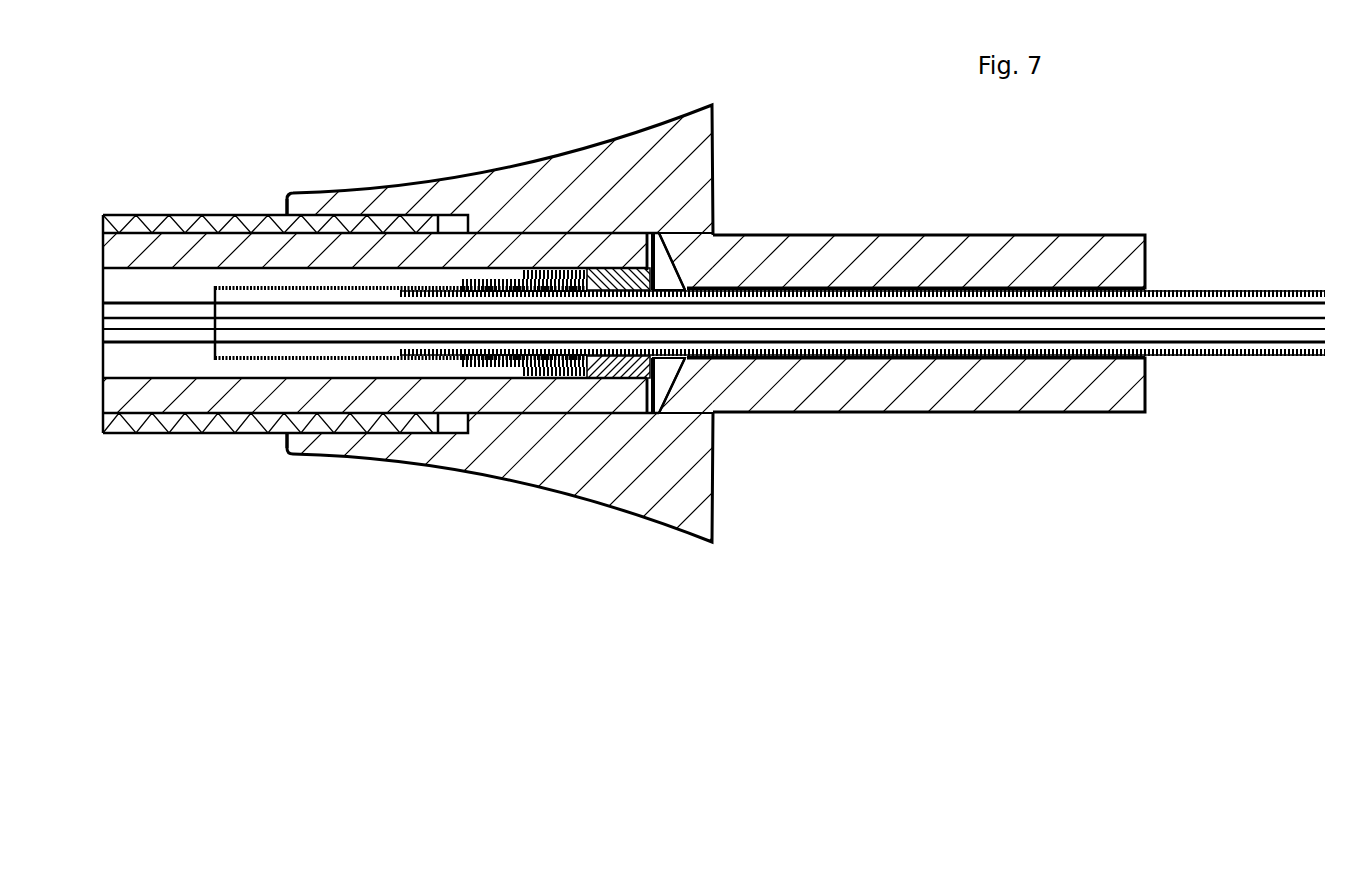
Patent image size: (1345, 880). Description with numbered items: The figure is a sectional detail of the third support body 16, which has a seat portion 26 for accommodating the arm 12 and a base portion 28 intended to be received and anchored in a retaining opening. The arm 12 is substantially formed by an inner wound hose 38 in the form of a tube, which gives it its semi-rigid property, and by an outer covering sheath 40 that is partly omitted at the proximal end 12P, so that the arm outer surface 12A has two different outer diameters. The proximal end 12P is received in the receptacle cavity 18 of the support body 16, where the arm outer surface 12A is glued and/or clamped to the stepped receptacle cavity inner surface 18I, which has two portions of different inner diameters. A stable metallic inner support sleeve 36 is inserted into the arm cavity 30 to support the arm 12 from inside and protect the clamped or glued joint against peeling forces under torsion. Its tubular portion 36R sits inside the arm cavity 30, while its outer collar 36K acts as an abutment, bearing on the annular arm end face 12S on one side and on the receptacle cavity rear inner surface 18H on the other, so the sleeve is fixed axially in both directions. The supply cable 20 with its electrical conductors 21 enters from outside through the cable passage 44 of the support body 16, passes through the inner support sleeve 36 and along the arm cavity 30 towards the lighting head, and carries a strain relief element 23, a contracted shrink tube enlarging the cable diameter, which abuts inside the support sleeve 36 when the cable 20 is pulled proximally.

The arm 12 is at (157, 393).
The arm outer surface 12A is at (337, 433).
The proximal end 12P is at (597, 393).
The annular arm end face 12S is at (668, 403).
The support body 16 is at (680, 150).
The receptacle cavity 18 is at (433, 212).
The receptacle cavity rear inner surface 18H is at (683, 380).
The receptacle cavity inner surface 18I is at (393, 433).
The supply cable 20 is at (1300, 352).
The electrical conductors 21 is at (1225, 332).
The strain relief element 23 is at (517, 278).
The seat portion 26 is at (543, 180).
The base portion 28 is at (955, 262).
The arm cavity 30 is at (123, 286).
The inner support sleeve 36 is at (649, 405).
The outer collar 36K is at (668, 245).
The tubular portion 36R is at (613, 272).
The wound hose 38 is at (125, 253).
The outer covering sheath 40 is at (115, 225).
The cable passage 44 is at (688, 292).